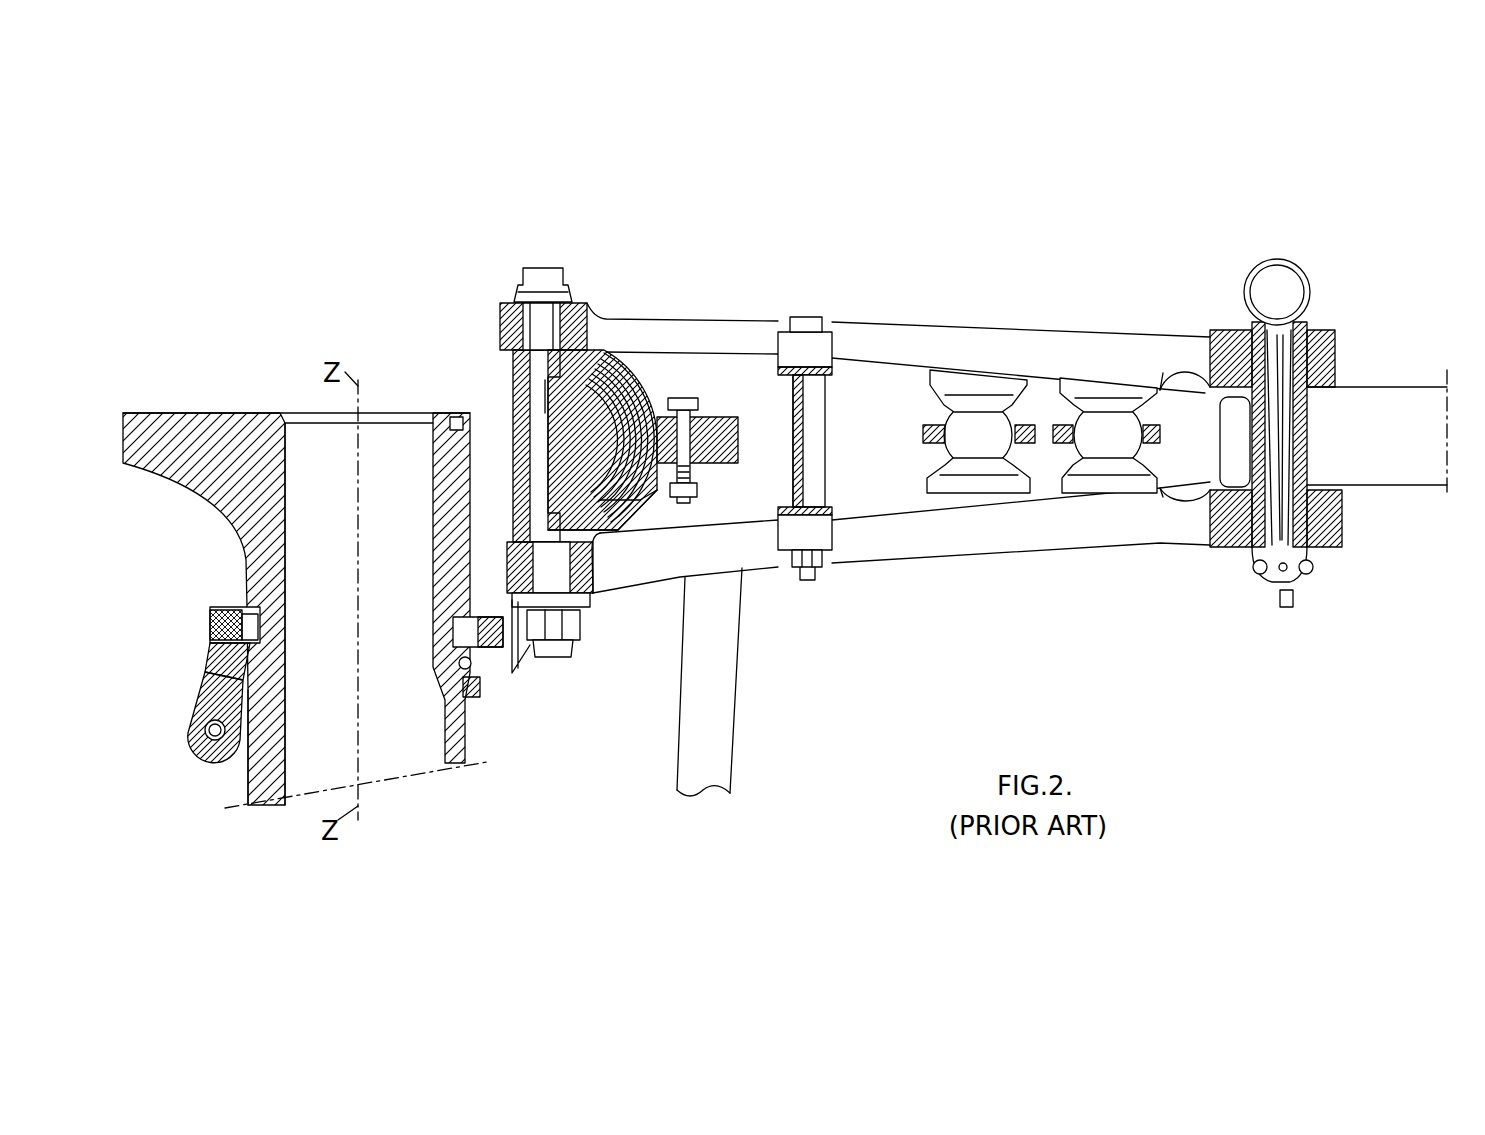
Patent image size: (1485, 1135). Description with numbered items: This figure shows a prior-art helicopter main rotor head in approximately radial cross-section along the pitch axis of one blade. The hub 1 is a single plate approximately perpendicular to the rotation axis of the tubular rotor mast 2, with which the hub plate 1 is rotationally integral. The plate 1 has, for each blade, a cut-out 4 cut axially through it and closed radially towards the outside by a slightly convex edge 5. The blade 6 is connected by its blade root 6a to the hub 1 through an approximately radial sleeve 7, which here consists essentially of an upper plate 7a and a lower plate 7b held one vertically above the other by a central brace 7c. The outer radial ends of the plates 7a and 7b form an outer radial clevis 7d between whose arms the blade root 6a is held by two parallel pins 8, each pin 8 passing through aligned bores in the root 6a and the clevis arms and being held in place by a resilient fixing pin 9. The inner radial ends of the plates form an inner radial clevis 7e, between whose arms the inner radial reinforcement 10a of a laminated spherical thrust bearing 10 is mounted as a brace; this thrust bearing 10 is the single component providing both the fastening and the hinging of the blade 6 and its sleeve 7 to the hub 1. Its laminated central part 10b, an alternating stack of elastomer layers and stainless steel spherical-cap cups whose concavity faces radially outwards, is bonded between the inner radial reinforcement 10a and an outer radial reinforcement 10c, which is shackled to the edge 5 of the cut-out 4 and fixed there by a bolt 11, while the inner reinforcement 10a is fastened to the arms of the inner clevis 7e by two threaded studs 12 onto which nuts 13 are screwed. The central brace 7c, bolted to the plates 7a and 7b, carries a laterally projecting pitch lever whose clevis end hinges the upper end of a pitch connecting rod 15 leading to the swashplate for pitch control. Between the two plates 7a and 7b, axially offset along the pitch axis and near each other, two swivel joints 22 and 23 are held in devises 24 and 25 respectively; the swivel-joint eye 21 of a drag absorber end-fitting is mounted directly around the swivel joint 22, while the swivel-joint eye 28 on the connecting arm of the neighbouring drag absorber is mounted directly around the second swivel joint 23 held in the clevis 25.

The hub 1 is at (152, 411).
The tubular rotor mast 2 is at (245, 772).
The cut-out 4 is at (490, 448).
The edge 5 is at (718, 450).
The blade 6 is at (1392, 391).
The blade root 6a is at (1377, 410).
The sleeve 7 is at (898, 433).
The upper plate 7a is at (722, 336).
The lower plate 7b is at (753, 550).
The central brace 7c is at (818, 455).
The outer radial clevis 7d is at (1225, 360).
The inner radial clevis 7e is at (598, 318).
The pin 8 is at (1305, 440).
The resilient fixing pin 9 is at (1305, 280).
The laminated spherical thrust bearing 10 is at (630, 434).
The inner radial reinforcement 10a is at (510, 428).
The laminated central part 10b is at (623, 373).
The outer radial reinforcement 10c is at (627, 537).
The bolt 11 is at (698, 398).
The threaded stud 12 is at (545, 282).
The nut 13 is at (553, 625).
The pitch connecting rod 15 is at (720, 742).
The swivel-joint eye 21 is at (1155, 387).
The swivel joint 22 is at (1107, 443).
The second swivel joint 23 is at (982, 442).
The clevis 24 is at (1115, 395).
The clevis 25 is at (988, 388).
The swivel-joint eye 28 is at (1028, 430).